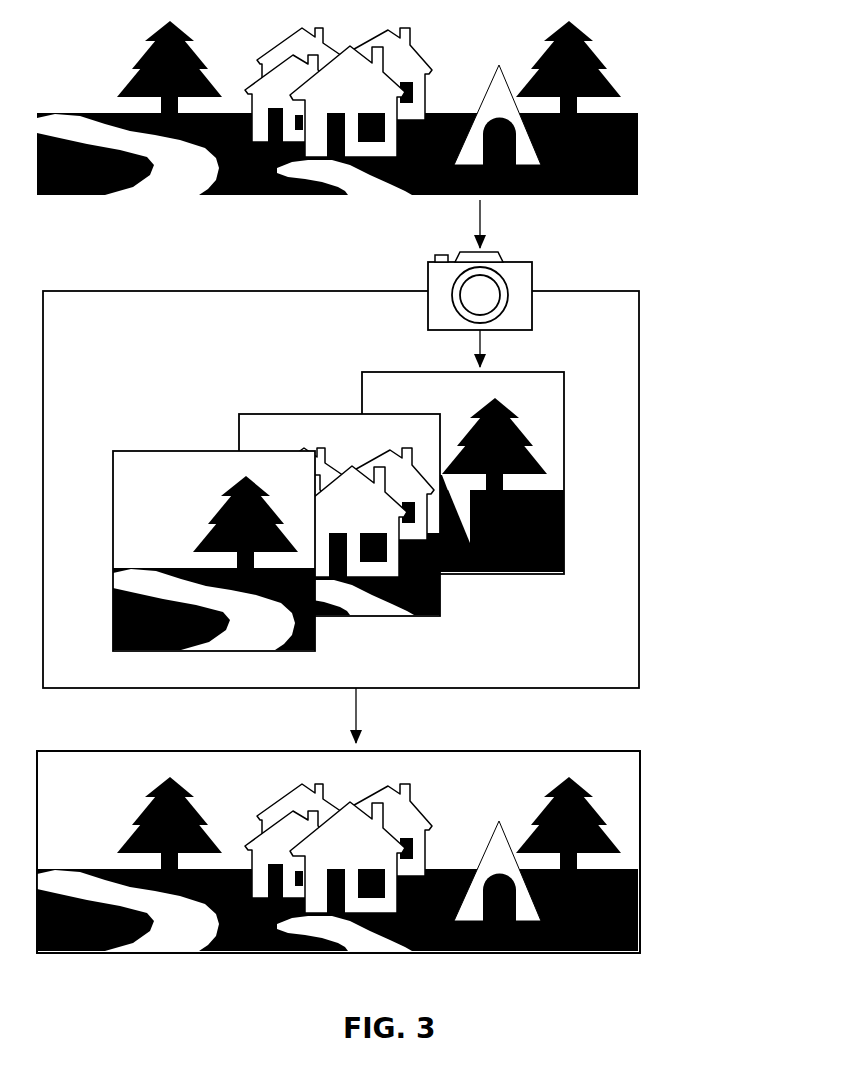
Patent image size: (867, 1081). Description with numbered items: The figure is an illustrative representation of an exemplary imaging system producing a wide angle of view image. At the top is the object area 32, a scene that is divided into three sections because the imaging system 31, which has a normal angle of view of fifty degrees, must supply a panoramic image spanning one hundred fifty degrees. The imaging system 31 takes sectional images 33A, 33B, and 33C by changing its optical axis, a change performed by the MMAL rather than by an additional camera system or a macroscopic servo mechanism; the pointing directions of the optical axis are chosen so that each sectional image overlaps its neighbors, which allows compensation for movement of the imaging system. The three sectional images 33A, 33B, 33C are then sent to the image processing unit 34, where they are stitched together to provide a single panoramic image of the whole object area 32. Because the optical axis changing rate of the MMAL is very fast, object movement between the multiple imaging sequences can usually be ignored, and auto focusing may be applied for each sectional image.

The imaging system 31 is at (535, 273).
The object area 32 is at (638, 108).
The sectional image 33A is at (143, 457).
The sectional image 33B is at (267, 420).
The sectional image 33C is at (387, 378).
The image processing unit 34 is at (640, 870).